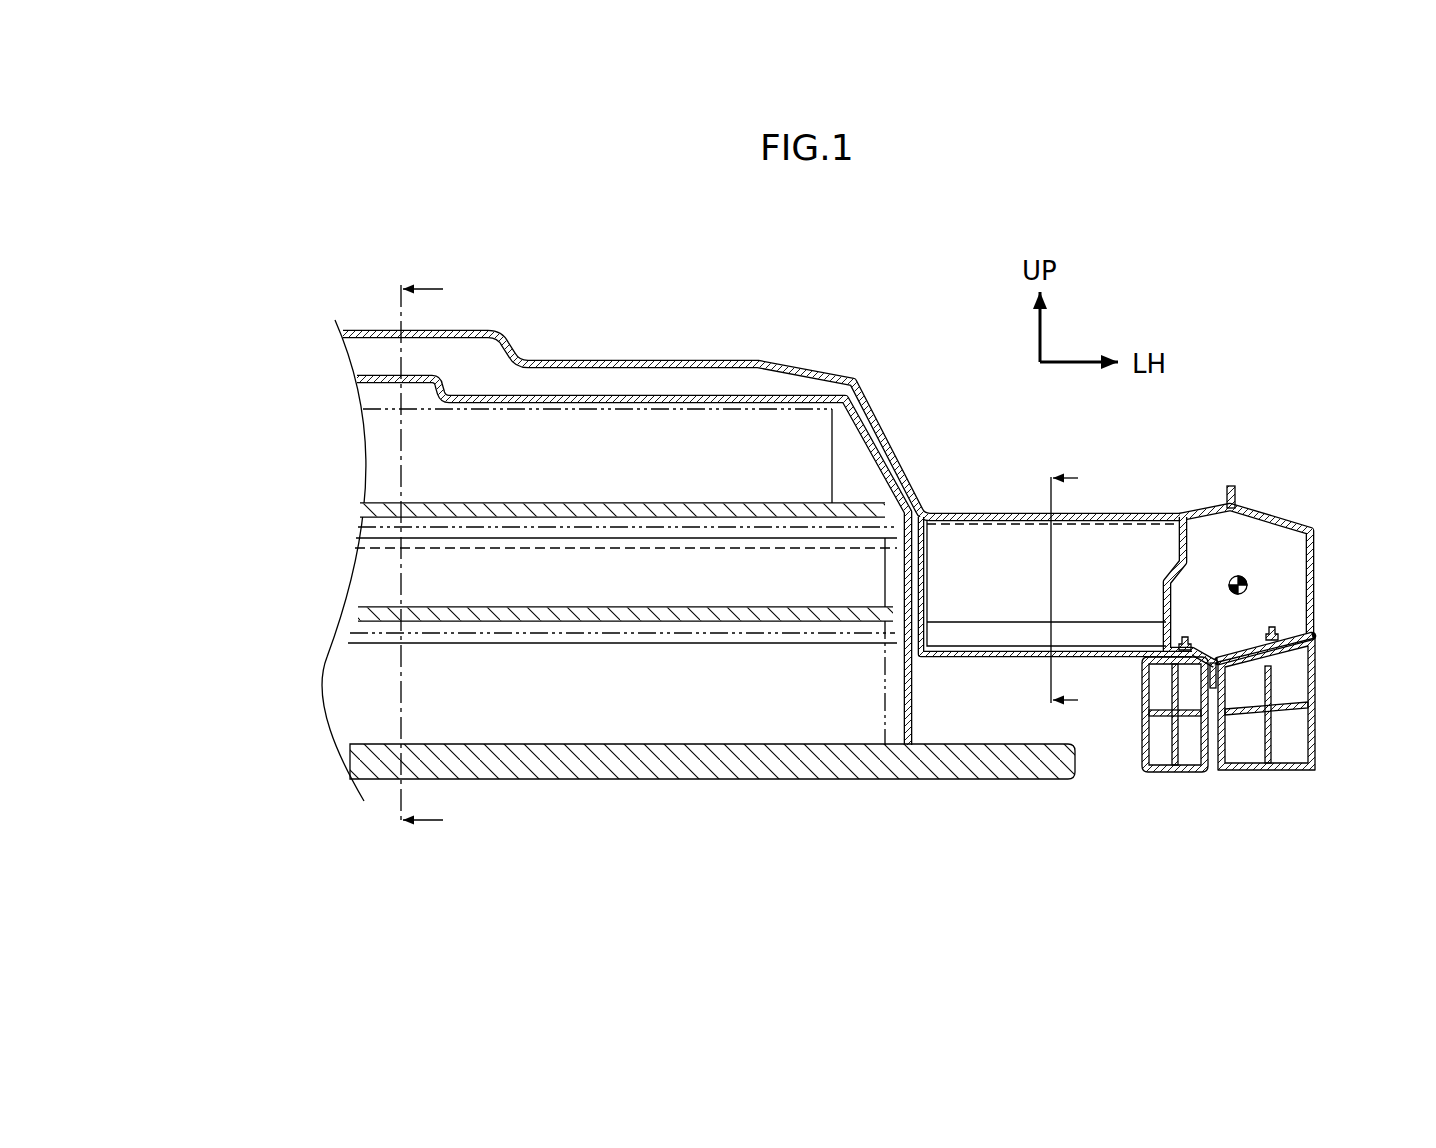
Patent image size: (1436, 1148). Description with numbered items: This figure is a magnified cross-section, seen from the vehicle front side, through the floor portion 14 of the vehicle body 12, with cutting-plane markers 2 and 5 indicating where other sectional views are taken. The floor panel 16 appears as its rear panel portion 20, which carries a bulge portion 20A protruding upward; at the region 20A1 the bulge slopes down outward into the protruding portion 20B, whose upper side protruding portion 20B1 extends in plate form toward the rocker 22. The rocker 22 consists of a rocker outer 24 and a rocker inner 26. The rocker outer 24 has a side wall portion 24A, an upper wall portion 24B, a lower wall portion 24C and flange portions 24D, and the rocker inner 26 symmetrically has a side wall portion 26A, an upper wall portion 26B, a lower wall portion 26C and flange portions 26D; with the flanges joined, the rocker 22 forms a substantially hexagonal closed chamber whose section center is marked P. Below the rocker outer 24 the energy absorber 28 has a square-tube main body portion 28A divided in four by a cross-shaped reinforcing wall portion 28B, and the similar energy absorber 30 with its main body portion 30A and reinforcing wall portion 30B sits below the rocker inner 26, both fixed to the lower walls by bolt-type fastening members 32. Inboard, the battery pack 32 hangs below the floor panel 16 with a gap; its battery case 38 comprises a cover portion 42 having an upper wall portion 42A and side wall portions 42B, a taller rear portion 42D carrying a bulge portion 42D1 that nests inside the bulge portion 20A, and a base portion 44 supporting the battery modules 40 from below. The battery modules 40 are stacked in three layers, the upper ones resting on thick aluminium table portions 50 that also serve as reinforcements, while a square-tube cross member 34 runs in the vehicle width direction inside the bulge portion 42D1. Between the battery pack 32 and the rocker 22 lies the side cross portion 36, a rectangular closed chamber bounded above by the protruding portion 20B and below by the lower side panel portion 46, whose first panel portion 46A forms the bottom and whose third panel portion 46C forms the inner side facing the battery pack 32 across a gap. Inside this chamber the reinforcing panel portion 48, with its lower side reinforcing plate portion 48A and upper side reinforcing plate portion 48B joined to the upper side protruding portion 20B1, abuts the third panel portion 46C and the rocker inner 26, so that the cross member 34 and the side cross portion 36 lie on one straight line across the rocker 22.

The section line 2 is at (1075, 592).
The section line 5 is at (432, 556).
The vehicle body 12 is at (750, 279).
The floor portion 14 is at (778, 317).
The floor panel 16 is at (762, 388).
The rear panel portion 20 is at (462, 328).
The bulge portion 20A is at (508, 346).
The inclined portion of floor panel 20A1 is at (896, 450).
The protruding portion 20B is at (1007, 447).
The upper side protruding portion 20B1 is at (963, 514).
The rocker 22 is at (1308, 519).
The rocker outer 24 is at (1308, 519).
The side wall portion 24A is at (1318, 567).
The upper wall portion 24B is at (1262, 512).
The lower wall portion 24C is at (1303, 641).
The flange portions 24D is at (1233, 484).
The rocker inner 26 is at (1177, 548).
The side wall portion 26A is at (1165, 604).
The upper wall portion 26B is at (1205, 492).
The lower wall portion 26C is at (1205, 653).
The flange portions 26D is at (1229, 486).
The energy absorber 28 is at (1322, 673).
The main body portion 28A is at (1290, 738).
The reinforcing wall portion 28B is at (1310, 770).
The energy absorber 30 is at (1141, 744).
The main body portion 30A is at (1160, 775).
The reinforcing wall portion 30B is at (1145, 697).
The battery pack 32 is at (1185, 637).
The cross member 34 is at (545, 593).
The side cross portion 36 is at (1010, 780).
The battery case 38 is at (682, 799).
The battery module 40 is at (390, 447).
The cover portion 42 is at (676, 387).
The upper wall portion 42A is at (763, 357).
The side wall portions 42B is at (862, 397).
The rear portion 42D is at (260, 345).
The bulge portion 42D1 is at (381, 375).
The base portion 44 is at (561, 780).
The lower side panel portion 46 is at (935, 665).
The first panel portion 46A is at (991, 660).
The third panel portion 46C is at (915, 615).
The reinforcing panel portion 48 is at (941, 568).
The lower side reinforcing plate portion 48A is at (950, 622).
The upper side reinforcing plate portion 48B is at (998, 515).
The table portions 50 is at (462, 503).
The center of the cross-section of the rocker P is at (1248, 582).